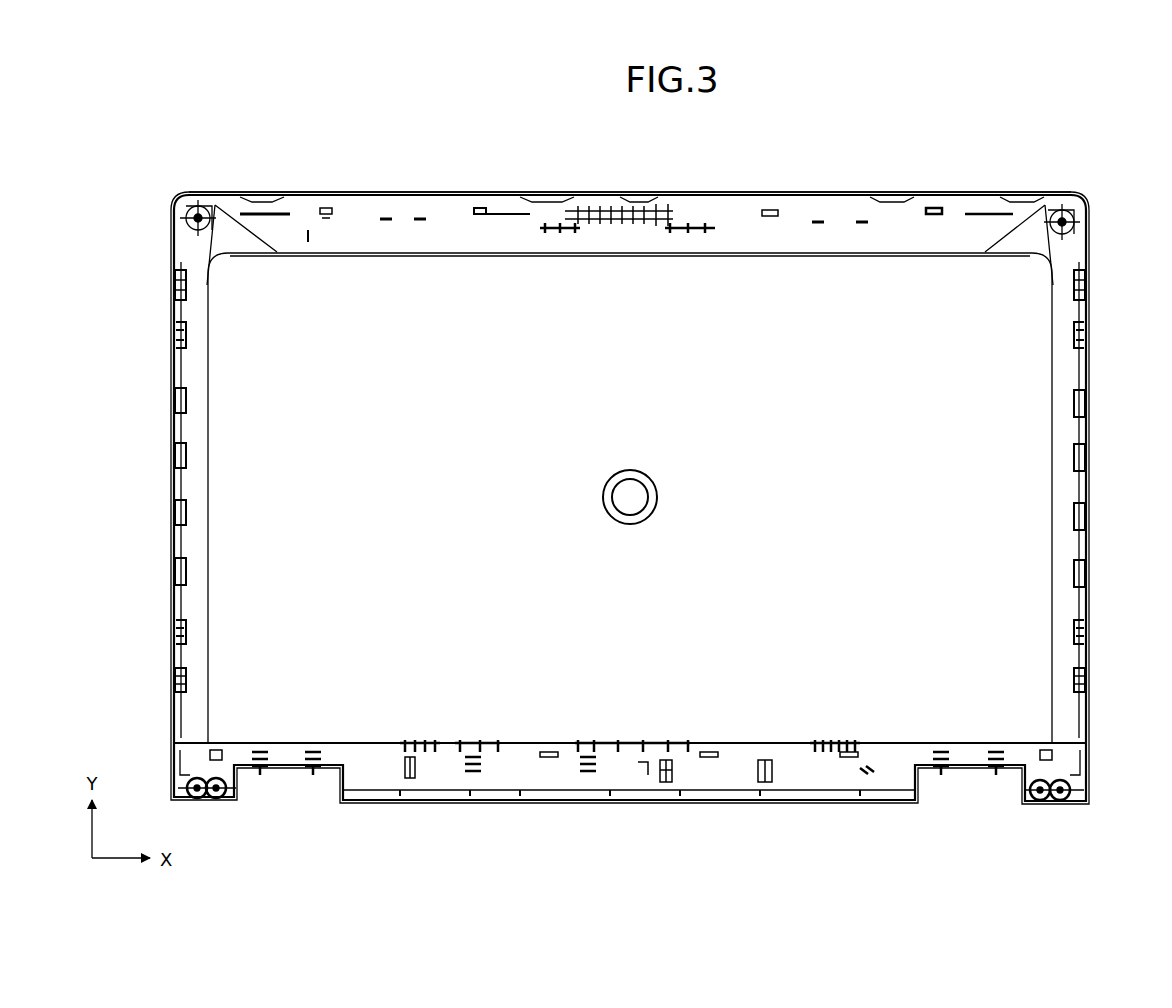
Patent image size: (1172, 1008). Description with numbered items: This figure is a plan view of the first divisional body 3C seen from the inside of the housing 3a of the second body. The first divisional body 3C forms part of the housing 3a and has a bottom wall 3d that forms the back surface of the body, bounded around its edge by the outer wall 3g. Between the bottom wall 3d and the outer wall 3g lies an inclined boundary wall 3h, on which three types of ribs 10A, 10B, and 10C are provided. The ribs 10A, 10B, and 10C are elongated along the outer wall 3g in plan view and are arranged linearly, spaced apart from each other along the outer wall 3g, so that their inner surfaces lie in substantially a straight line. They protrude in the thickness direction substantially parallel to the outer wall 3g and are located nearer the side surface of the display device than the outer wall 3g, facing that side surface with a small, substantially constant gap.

The housing 3a is at (630, 459).
The first divisional body 3C is at (975, 190).
The bottom wall 3d is at (836, 283).
The outer wall 3g is at (411, 195).
The inclined boundary wall 3h is at (722, 214).
The rib 10A is at (188, 285).
The rib 10B is at (188, 331).
The rib 10C is at (188, 399).